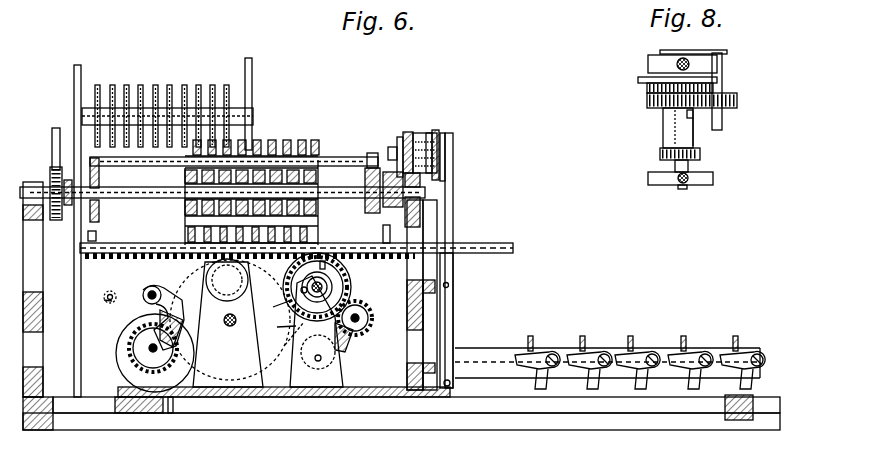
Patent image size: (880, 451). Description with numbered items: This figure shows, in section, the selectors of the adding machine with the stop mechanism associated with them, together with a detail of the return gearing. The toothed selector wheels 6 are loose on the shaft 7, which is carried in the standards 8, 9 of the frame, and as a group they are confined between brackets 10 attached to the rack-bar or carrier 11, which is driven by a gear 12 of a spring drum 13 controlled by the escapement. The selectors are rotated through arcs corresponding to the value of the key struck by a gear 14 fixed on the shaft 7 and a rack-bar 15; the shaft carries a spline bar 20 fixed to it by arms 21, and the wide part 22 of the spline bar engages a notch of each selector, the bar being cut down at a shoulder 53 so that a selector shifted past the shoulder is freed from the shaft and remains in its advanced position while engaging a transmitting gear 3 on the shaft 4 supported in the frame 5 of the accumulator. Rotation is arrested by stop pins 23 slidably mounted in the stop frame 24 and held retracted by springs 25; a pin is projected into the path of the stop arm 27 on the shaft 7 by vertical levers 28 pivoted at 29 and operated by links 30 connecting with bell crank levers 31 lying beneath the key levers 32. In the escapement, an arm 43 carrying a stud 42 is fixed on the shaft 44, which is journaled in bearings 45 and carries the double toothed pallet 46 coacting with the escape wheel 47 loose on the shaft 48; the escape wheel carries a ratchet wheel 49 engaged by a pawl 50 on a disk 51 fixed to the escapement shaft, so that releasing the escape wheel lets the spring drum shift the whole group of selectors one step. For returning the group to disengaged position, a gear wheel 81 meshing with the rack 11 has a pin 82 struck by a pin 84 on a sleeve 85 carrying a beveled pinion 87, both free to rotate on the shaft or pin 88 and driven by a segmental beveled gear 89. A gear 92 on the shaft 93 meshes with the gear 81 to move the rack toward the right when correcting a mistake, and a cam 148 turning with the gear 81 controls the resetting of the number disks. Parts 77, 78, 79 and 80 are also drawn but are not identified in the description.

In FIG. 6, the transmitting gears 3 is at (232, 96).
In FIG. 6, the shaft 4 is at (252, 114).
In FIG. 6, the frame 5 is at (253, 64).
In FIG. 6, the toothed selector wheels 6 is at (263, 140).
In FIG. 6, the shaft 7 is at (158, 199).
In FIG. 6, the standard 8 is at (421, 281).
In FIG. 6, the standard 9 is at (34, 258).
In FIG. 6, the brackets 10 is at (185, 213).
In FIG. 6, the rack-bar or carrier 11 is at (158, 256).
In FIG. 6, the gear 12 is at (293, 350).
In FIG. 6, the spring drum 13 is at (228, 324).
In FIG. 6, the gear 14 is at (50, 180).
In FIG. 6, the rack-bar 15 is at (52, 140).
In FIG. 6, the spline bar 20 is at (146, 249).
In FIG. 6, the arms 21 is at (390, 233).
In FIG. 6, the wide part of spline bar 22 is at (318, 233).
In FIG. 6, the stop pins 23 is at (429, 132).
In FIG. 6, the stop frame 24 is at (438, 130).
In FIG. 6, the springs 25 is at (418, 132).
In FIG. 6, the stop arm 27 is at (396, 141).
In FIG. 6, the vertical levers 28 is at (453, 214).
In FIG. 6, the pivot 29 is at (455, 288).
In FIG. 6, the links 30 is at (504, 383).
In FIG. 6, the bell crank levers 31 is at (556, 357).
In FIG. 6, the key lever 32 is at (579, 340).
In FIG. 6, the stud 42 is at (107, 298).
In FIG. 6, the arm 43 is at (106, 301).
In FIG. 6, the shaft 44 is at (143, 297).
In FIG. 6, the bearings 45 is at (128, 348).
In FIG. 6, the double toothed pallet 46 is at (140, 292).
In FIG. 6, the escape wheel 47 is at (133, 340).
In FIG. 6, the shaft 48 is at (133, 360).
In FIG. 6, the ratchet wheel 49 is at (126, 378).
In FIG. 6, the pawl 50 is at (178, 413).
In FIG. 6, the disk 51 is at (169, 414).
In FIG. 6, the shoulder 53 is at (247, 285).
In FIG. 6, the collar 77 is at (368, 210).
In FIG. 6, the collar 78 is at (99, 214).
In FIG. 6, the upper shaft 79 is at (143, 167).
In FIG. 6, the rail 80 is at (305, 157).
In FIG. 6, the gear wheel 81 is at (273, 309).
In FIG. 8, the gear wheel 81 is at (647, 102).
In FIG. 6, the pin 82 is at (277, 328).
In FIG. 8, the pin 82 is at (694, 130).
In FIG. 6, the pin 84 is at (337, 272).
In FIG. 8, the pin 84 is at (693, 114).
In FIG. 6, the sleeve 85 is at (345, 289).
In FIG. 8, the sleeve 85 is at (663, 134).
In FIG. 8, the beveled pinion 87 is at (660, 155).
In FIG. 8, the shaft or pin 88 is at (680, 170).
In FIG. 6, the segmental beveled gear 89 is at (297, 333).
In FIG. 6, the gear 92 is at (353, 336).
In FIG. 6, the shaft 93 is at (373, 319).
In FIG. 8, the cam 148 is at (697, 66).